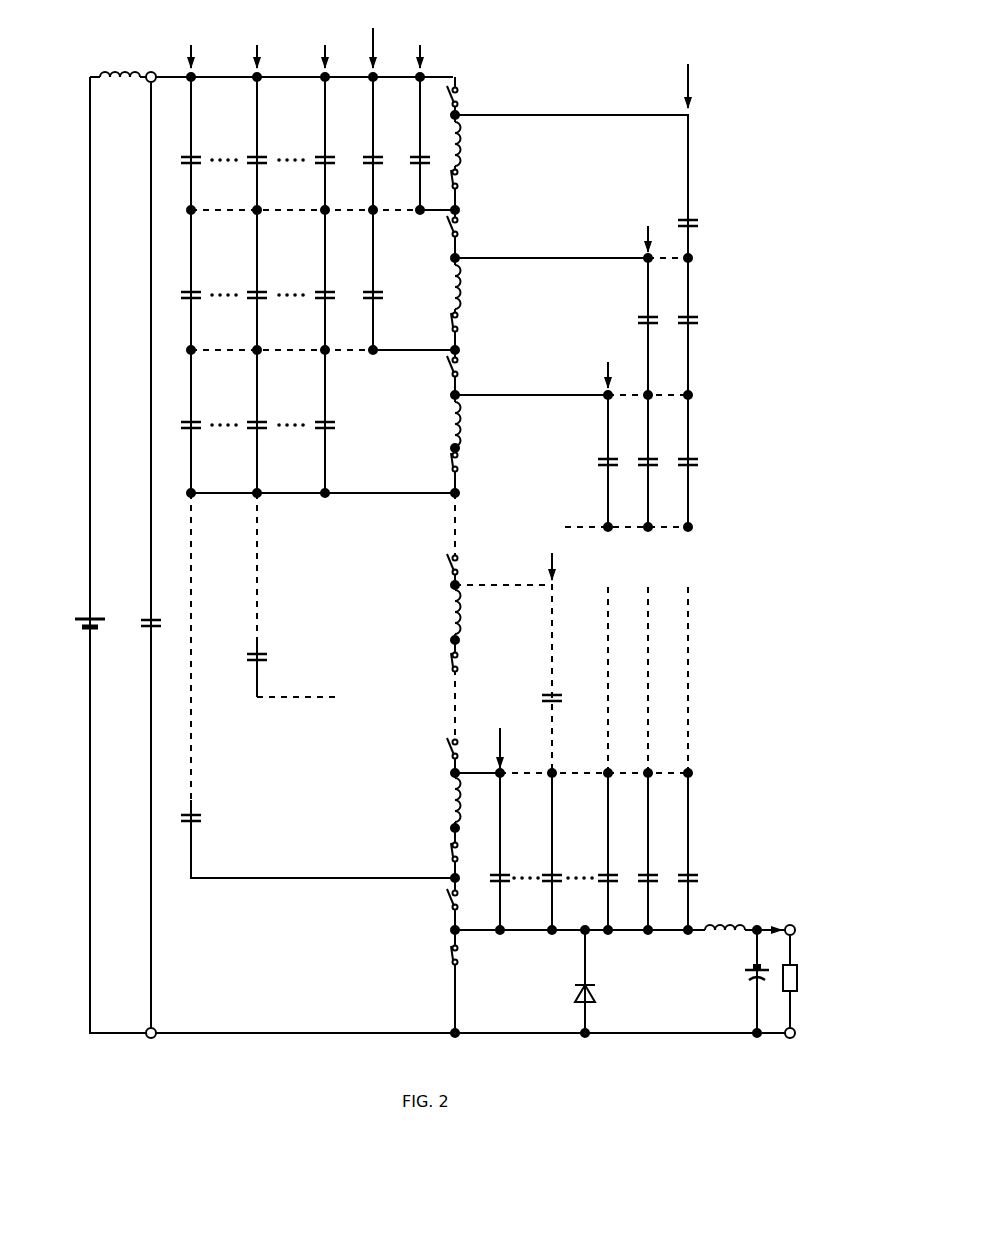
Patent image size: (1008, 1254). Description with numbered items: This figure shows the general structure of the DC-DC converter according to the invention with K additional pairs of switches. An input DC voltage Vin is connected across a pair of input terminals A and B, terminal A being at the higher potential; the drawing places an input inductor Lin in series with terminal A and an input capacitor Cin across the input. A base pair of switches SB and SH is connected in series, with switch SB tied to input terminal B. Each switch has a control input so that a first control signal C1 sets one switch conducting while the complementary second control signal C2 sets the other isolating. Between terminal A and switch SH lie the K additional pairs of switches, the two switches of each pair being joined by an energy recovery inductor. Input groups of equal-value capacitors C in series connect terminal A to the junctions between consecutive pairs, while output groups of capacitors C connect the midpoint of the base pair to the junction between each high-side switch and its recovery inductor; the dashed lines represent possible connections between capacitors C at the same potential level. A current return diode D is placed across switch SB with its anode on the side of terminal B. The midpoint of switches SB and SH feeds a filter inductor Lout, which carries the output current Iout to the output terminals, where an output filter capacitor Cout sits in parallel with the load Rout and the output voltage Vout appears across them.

The input inductor Lin is at (110, 70).
The input terminal A is at (149, 71).
The input terminal B is at (155, 1038).
The switch SH is at (448, 903).
The switch SB is at (452, 960).
The first control signal C1 is at (463, 103).
The second control signal C2 is at (463, 181).
The capacitor C is at (186, 170).
The input DC voltage Vin is at (68, 592).
The input capacitor Cin is at (148, 636).
The output terminal / current return diode D is at (592, 990).
The filter inductor Lout is at (744, 940).
The output current Iout is at (762, 924).
The output filter capacitor Cout is at (750, 978).
The load Rout is at (784, 990).
The output voltage Vout is at (806, 938).